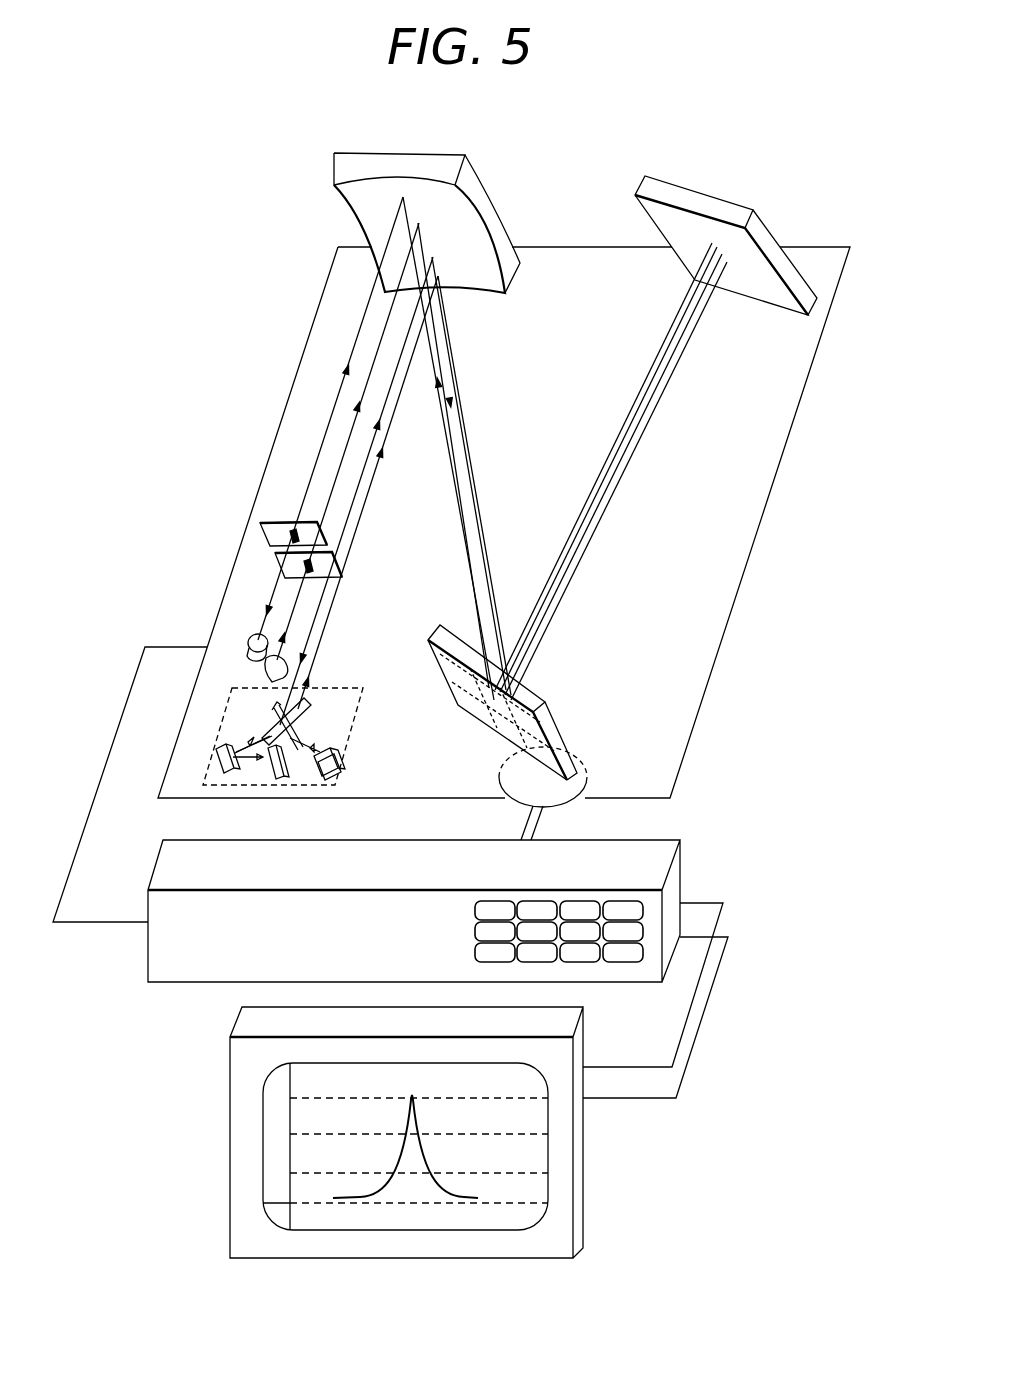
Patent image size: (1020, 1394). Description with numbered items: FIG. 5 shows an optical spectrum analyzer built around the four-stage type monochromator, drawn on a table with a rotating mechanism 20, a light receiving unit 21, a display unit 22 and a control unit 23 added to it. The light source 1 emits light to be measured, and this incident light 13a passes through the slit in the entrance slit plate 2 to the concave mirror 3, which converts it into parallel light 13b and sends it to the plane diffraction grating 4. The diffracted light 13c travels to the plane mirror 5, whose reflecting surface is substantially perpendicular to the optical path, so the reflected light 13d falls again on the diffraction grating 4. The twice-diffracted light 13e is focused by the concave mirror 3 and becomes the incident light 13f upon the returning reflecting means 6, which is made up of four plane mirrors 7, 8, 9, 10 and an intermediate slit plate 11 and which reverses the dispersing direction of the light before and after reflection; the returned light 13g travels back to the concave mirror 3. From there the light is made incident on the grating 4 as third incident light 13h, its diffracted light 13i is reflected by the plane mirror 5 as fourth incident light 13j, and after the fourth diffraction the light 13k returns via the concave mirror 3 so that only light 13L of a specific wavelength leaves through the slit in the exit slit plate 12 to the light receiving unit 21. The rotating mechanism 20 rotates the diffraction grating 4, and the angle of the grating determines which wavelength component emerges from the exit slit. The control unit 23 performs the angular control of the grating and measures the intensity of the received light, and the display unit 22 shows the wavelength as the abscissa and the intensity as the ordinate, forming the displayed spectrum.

The light source 1 is at (266, 663).
The entrance slit plate 2 is at (278, 557).
The concave mirror 3 is at (372, 152).
The diffraction grating 4 is at (550, 715).
The plane mirror 5 is at (715, 200).
The returning reflecting means 6 is at (330, 780).
The plane mirror 7 is at (262, 698).
The plane mirror 8 is at (222, 770).
The plane mirror 9 is at (338, 753).
The plane mirror 10 is at (310, 702).
The intermediate slit plate 11 is at (275, 781).
The exit slit plate 12 is at (262, 522).
The incident light 13a is at (296, 605).
The parallel light 13b is at (445, 378).
The diffracted light 13c is at (600, 512).
The reflected light 13d is at (597, 545).
The diffracted light 13e is at (465, 440).
The incident light 13f is at (360, 487).
The light beam 13g is at (360, 518).
The third incident light 13h is at (476, 472).
The diffracted light 13i is at (590, 575).
The fourth incident light 13j is at (615, 470).
The light beam 13k is at (471, 505).
The light beam 13L is at (328, 432).
The rotating mechanism 20 is at (558, 814).
The light receiving unit 21 is at (250, 645).
The display unit 22 is at (588, 1178).
The control unit 23 is at (666, 840).